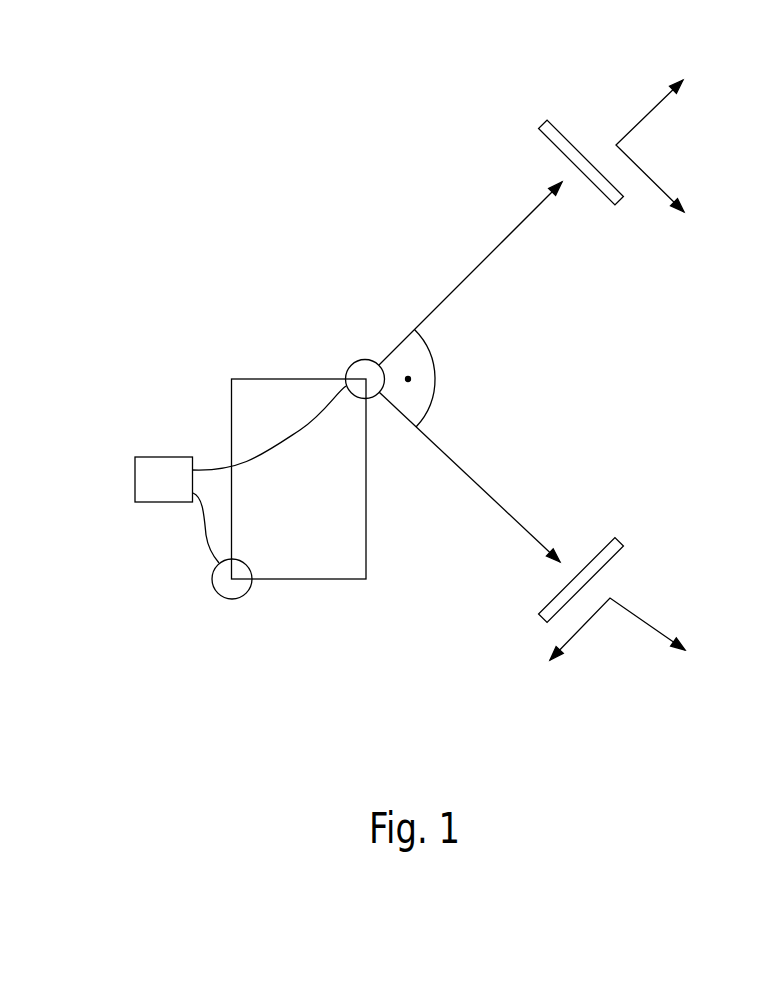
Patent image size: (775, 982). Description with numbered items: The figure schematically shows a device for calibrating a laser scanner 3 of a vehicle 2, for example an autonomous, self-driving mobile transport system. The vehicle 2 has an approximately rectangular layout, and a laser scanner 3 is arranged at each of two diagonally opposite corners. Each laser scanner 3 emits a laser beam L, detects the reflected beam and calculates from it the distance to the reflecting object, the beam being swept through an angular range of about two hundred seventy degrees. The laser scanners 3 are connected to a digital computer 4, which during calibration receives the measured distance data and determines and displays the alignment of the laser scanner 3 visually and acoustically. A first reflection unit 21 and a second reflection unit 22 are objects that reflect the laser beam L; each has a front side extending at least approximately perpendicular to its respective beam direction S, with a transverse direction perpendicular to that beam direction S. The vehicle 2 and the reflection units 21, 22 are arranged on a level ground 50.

The ground 50 is at (137, 176).
The vehicle 2 is at (253, 416).
The laser scanner 3 is at (365, 379).
The digital computer 4 is at (153, 490).
The first reflection unit 21 is at (579, 117).
The second reflection unit 22 is at (625, 537).
The laser beam L is at (475, 267).
The beam direction S is at (621, 369).